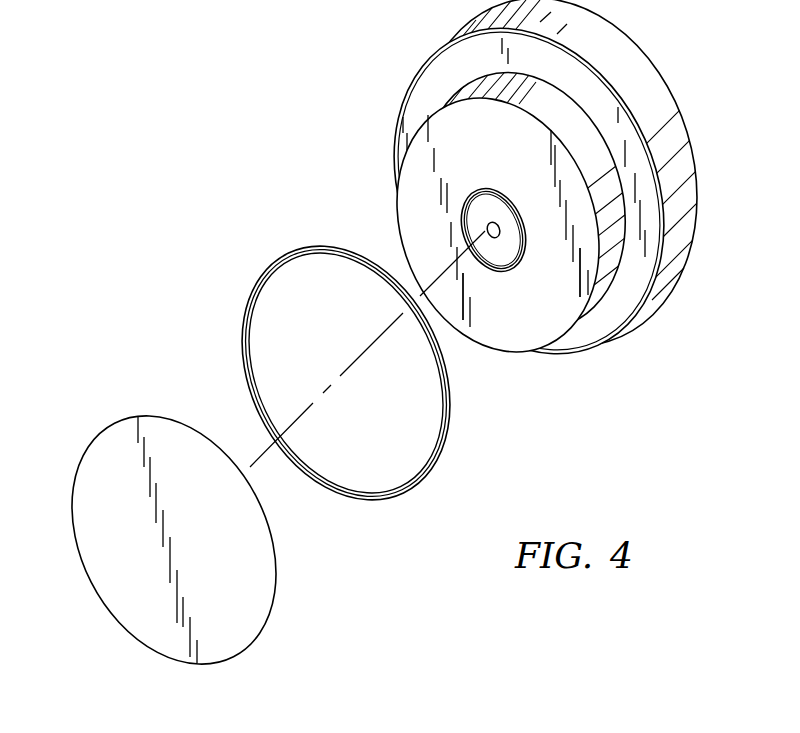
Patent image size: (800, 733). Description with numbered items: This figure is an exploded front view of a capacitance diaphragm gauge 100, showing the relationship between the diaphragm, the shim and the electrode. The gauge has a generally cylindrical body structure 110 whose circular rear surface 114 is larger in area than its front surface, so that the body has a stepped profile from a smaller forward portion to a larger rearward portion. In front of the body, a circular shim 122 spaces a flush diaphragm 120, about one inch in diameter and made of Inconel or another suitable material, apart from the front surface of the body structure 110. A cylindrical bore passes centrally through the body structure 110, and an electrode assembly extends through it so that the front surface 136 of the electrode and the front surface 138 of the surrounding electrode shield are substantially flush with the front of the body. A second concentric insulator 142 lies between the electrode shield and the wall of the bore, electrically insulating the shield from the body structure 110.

The capacitance diaphragm gauge 100 is at (231, 104).
The body structure 110 is at (680, 243).
The rear surface 114 is at (527, 320).
The flush diaphragm 120 is at (168, 433).
The circular shim 122 is at (302, 251).
The front surface of the electrode 136 is at (483, 217).
The front surface of the electrode shield 138 is at (518, 268).
The second concentric insulator 142 is at (505, 272).